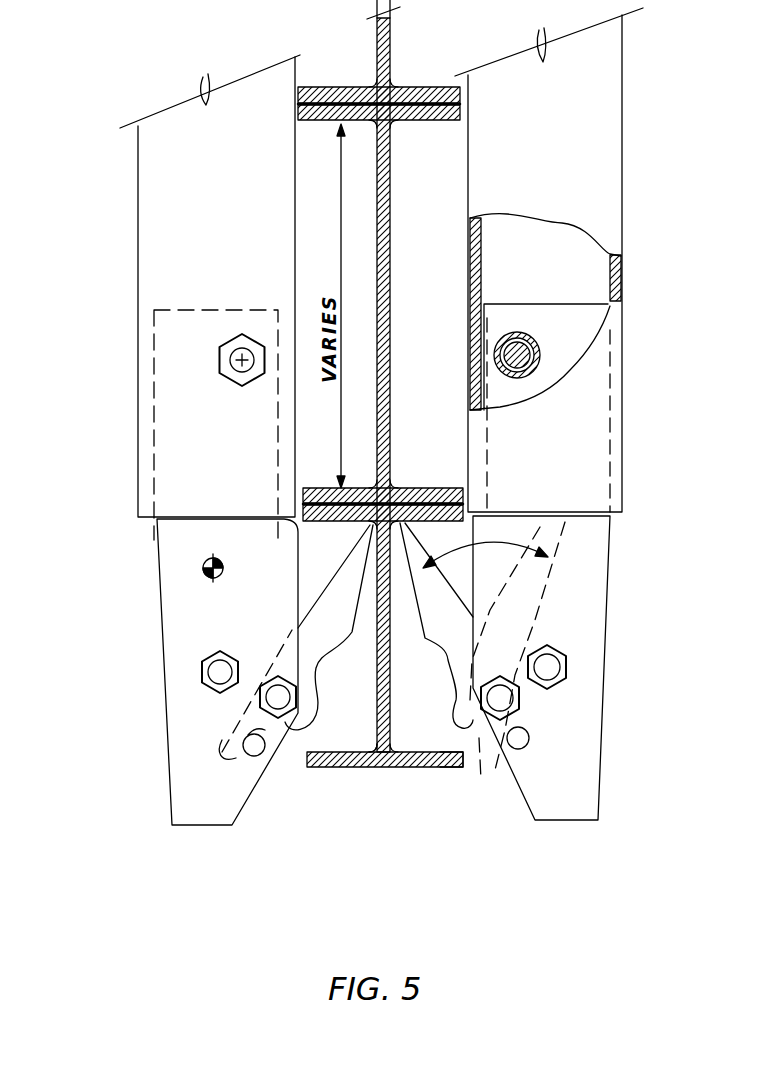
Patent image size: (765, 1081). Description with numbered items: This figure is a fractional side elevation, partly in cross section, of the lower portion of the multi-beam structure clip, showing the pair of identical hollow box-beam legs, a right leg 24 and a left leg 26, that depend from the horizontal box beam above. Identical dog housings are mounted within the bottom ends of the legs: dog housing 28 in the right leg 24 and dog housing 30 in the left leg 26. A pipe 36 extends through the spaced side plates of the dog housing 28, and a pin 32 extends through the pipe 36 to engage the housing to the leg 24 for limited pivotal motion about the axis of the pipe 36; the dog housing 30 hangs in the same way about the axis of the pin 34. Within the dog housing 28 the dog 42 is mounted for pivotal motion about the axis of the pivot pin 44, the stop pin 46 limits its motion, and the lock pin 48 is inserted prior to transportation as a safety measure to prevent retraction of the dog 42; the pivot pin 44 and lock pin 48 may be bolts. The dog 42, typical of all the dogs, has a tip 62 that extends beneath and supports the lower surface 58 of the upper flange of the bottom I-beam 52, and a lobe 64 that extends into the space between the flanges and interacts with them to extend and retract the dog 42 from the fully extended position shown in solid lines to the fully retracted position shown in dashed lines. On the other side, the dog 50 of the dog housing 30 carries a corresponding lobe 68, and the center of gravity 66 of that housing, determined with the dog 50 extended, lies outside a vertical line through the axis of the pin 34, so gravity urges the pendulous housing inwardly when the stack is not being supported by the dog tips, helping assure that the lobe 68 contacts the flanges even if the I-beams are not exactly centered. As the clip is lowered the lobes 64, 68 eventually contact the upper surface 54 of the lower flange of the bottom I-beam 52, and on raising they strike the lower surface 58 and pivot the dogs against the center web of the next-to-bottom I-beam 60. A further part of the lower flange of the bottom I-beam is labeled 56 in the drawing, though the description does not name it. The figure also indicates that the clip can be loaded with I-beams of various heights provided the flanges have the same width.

The right leg 24 is at (512, 178).
The left leg 26 is at (148, 253).
The dog housing 28 is at (600, 553).
The dog housing 30 is at (170, 652).
The pin 32 is at (512, 358).
The pin 34 is at (240, 360).
The pipe 36 is at (500, 346).
The dog 42 is at (445, 643).
The pivot pin 44 is at (556, 655).
The stop pin 46 is at (567, 667).
The lock pin 48 is at (530, 742).
The dog 50 is at (322, 652).
The bottom I-beam 52 is at (391, 770).
The upper surface of the lower flange 54 is at (404, 749).
The lower flange end 56 is at (448, 770).
The lower surface of the upper flange 58 is at (445, 521).
The next-to-bottom I-beam 60 is at (388, 306).
The tip 62 is at (420, 536).
The lobe 64 is at (470, 727).
The center of gravity 66 is at (228, 568).
The lobe 68 is at (318, 718).